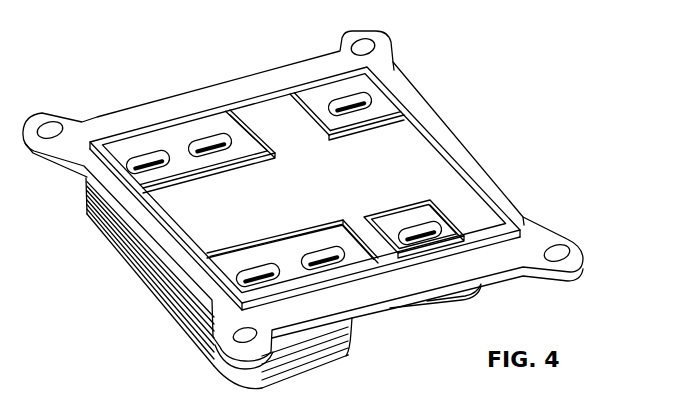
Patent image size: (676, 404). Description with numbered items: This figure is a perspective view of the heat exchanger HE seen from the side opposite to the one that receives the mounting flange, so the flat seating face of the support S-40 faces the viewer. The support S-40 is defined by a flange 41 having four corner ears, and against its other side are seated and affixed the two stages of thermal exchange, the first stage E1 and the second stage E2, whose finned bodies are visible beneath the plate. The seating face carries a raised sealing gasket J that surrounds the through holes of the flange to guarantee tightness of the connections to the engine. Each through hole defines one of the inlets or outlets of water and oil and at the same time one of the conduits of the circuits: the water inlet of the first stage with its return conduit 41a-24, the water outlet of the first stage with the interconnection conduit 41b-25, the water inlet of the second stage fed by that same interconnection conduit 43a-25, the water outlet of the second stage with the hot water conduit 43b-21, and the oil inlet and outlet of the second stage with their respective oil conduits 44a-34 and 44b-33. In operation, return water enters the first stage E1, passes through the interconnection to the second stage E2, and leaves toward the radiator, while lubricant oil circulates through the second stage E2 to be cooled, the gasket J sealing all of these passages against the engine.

The flange 41 is at (94, 133).
The support flange S-40 is at (460, 133).
The sealing gasket J is at (296, 117).
The water outlet of second stage / hot water conduit 43b-21 is at (146, 160).
The oil outlet of second stage / oil conduit 44b-33 is at (209, 143).
The water outlet of first stage / interconnection conduit 41b-25 is at (343, 102).
The water inlet of second stage / interconnection conduit 43a-25 is at (316, 256).
The oil inlet of second stage / oil conduit 44a-34 is at (257, 272).
The water inlet of first stage / return conduit 41a-24 is at (416, 226).
The second stage of thermal exchange E2 is at (106, 284).
The heat exchanger HE is at (386, 332).
The first stage of thermal exchange E1 is at (449, 314).